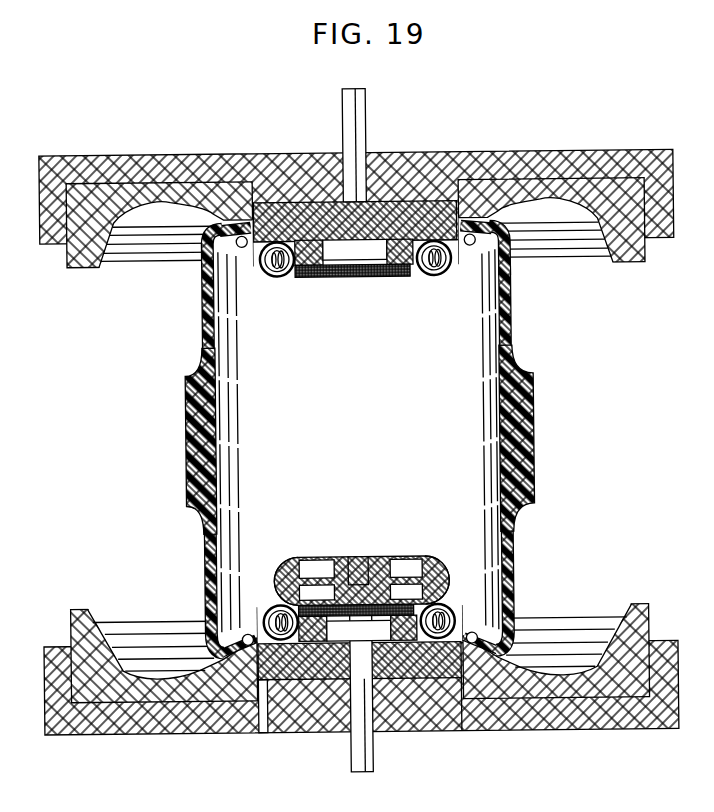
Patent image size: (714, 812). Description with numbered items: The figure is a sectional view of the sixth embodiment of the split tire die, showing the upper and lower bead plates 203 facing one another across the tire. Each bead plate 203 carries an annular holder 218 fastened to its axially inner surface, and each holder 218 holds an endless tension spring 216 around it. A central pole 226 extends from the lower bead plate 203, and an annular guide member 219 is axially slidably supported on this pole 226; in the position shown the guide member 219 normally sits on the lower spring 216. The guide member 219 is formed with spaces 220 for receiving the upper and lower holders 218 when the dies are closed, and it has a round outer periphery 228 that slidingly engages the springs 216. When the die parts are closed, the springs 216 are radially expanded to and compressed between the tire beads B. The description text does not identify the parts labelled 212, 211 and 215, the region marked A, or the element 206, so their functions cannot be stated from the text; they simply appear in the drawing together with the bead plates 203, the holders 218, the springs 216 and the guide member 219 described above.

The mounting plate 212 is at (48, 156).
The seal ring holder 211 is at (140, 148).
The bead plate 203 is at (305, 205).
The rod 215 is at (358, 128).
The endless tension spring 216 is at (272, 281).
The annular holder 218 is at (403, 282).
The tire bead B is at (474, 252).
The bellows reinforced section A is at (188, 434).
The round outer periphery 228 is at (268, 572).
The spaces 220 is at (310, 566).
The central pole 226 is at (354, 560).
The annular guide member 219 is at (414, 550).
The retainer end 206 is at (456, 565).